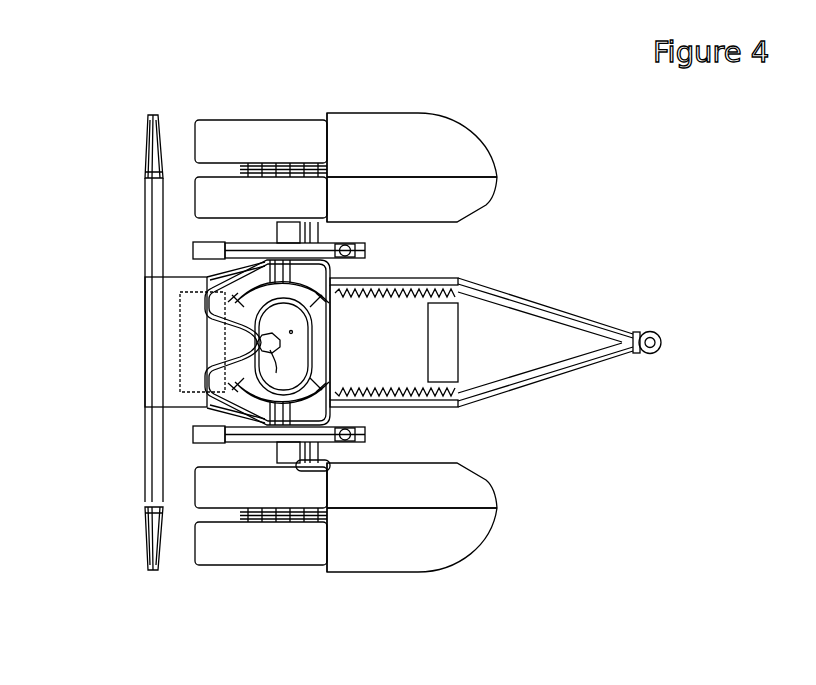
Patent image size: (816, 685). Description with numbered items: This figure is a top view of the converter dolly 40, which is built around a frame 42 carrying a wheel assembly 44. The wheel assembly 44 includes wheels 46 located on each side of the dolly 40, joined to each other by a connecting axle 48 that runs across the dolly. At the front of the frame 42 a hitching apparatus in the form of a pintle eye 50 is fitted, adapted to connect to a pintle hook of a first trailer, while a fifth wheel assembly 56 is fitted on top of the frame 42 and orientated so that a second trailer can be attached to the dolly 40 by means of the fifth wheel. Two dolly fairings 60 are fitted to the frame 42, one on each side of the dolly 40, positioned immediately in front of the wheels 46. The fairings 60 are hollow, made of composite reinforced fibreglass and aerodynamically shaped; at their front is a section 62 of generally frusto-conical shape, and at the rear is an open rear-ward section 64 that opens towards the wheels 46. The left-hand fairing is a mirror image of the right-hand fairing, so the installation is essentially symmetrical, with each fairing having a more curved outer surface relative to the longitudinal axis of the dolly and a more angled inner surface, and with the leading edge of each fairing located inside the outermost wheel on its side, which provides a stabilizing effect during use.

The converter dolly 40 is at (603, 188).
The frame 42 is at (535, 385).
The wheel assembly 44 is at (218, 91).
The wheels 46 is at (275, 120).
The connecting axle 48 is at (303, 235).
The pintle eye 50 is at (663, 343).
The fifth wheel assembly 56 is at (285, 348).
The dolly fairings 60 is at (437, 140).
The frusto-conical section 62 is at (498, 181).
The open rear-ward section 64 is at (314, 110).